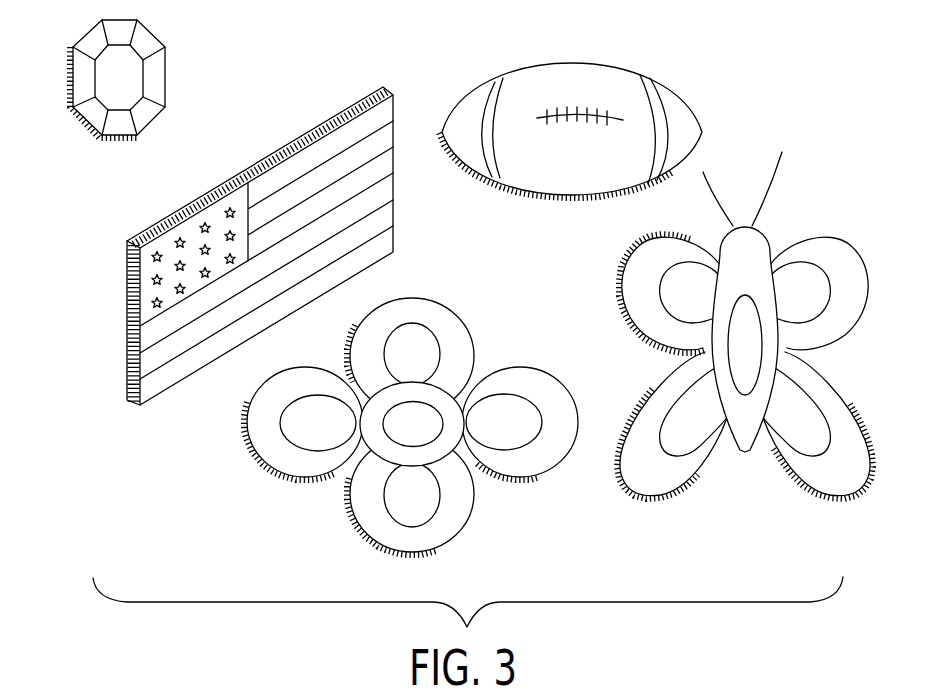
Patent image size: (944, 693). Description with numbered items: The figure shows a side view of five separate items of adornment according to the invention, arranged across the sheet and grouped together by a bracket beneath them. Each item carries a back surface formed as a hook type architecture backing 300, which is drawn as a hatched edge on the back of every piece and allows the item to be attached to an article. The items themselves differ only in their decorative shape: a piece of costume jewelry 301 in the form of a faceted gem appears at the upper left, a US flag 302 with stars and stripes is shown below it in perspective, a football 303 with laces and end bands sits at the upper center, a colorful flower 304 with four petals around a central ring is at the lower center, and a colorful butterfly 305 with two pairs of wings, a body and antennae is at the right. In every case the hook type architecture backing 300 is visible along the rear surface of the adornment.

The hook type architecture backing 300 is at (97, 138).
The costume jewelry 301 is at (155, 43).
The US flag 302 is at (365, 122).
The football 303 is at (575, 80).
The colorful flower 304 is at (446, 325).
The colorful butterfly 305 is at (813, 252).